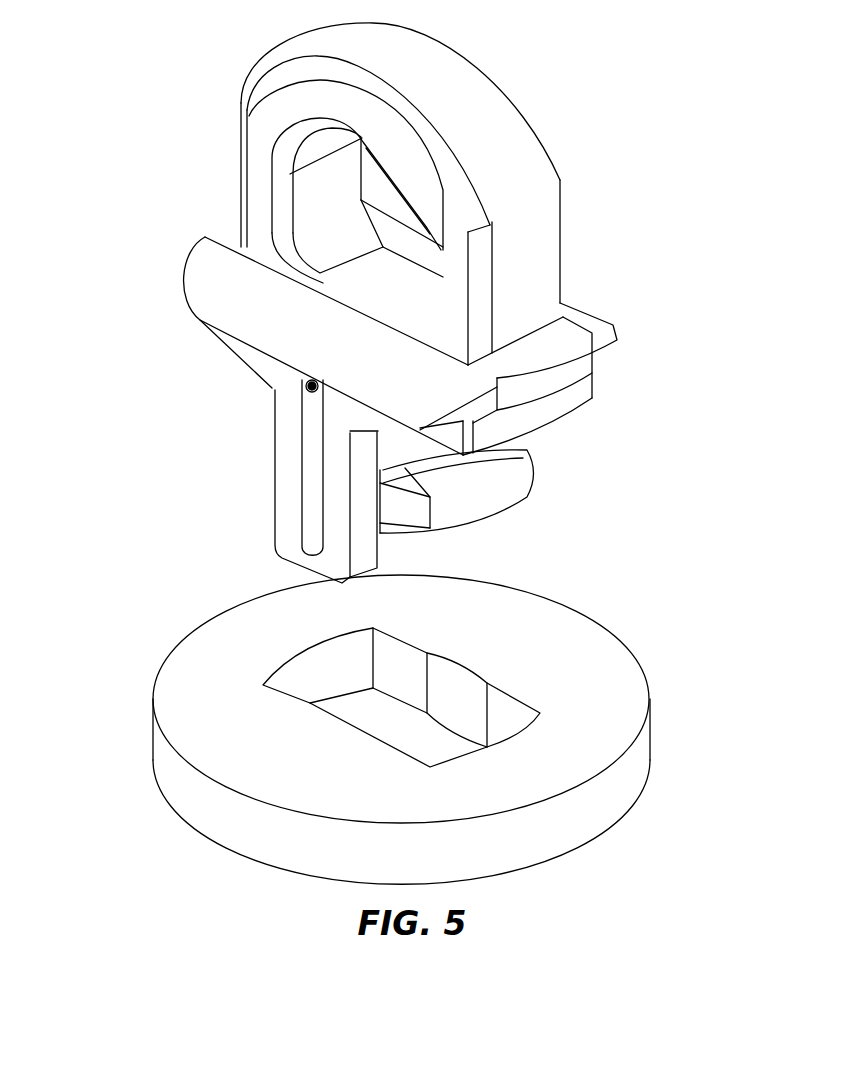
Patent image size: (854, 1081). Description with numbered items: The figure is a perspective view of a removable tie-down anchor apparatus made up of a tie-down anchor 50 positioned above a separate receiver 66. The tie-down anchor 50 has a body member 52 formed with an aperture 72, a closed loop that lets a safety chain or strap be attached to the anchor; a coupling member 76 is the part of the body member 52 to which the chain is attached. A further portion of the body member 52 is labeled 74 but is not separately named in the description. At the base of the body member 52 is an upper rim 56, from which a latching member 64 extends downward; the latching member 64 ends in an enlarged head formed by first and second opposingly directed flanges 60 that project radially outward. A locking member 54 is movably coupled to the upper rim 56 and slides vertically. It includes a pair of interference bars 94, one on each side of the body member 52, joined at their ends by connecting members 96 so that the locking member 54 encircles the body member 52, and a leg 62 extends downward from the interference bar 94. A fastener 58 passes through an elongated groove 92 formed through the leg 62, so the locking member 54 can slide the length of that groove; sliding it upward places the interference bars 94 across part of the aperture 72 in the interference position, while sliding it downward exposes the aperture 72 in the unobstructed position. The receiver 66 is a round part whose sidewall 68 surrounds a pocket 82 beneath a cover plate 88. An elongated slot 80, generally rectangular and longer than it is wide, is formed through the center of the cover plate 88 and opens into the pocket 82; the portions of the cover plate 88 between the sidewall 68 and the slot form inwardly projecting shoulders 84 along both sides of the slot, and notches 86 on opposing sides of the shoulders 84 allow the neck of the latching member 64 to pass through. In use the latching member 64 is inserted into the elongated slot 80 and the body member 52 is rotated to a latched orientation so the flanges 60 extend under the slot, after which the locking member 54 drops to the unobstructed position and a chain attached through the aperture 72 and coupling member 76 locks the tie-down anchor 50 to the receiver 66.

The tie-down anchor 50 is at (200, 77).
The body member 52 is at (563, 178).
The locking member 54 is at (178, 256).
The upper rim 56 is at (565, 404).
The fastener 58 is at (305, 385).
The flanges 60 is at (540, 472).
The leg 62 is at (287, 496).
The latching member 64 is at (452, 545).
The receiver 66 is at (170, 642).
The sidewall 68 is at (195, 790).
The aperture 72 is at (387, 185).
The side portion 74 is at (548, 273).
The coupling member 76 is at (490, 100).
The elongated slot 80 is at (285, 705).
The pocket 82 is at (383, 731).
The shoulders 84 is at (393, 652).
The notches 86 is at (470, 698).
The cover plate 88 is at (195, 736).
The elongated groove 92 is at (318, 443).
The interference bar 94 is at (217, 293).
The connecting members 96 is at (583, 361).